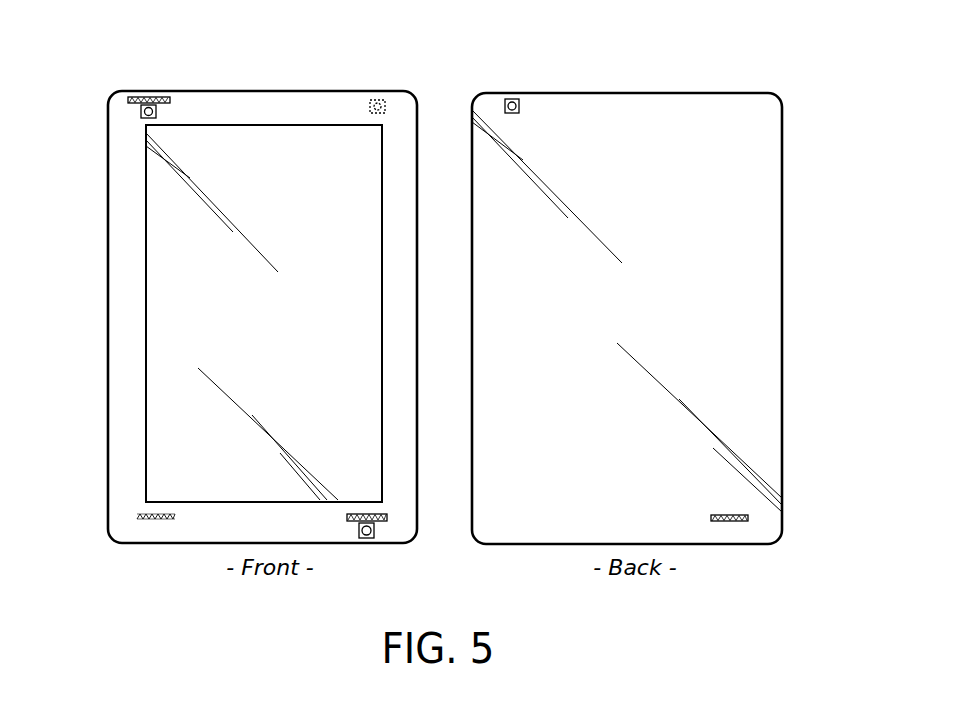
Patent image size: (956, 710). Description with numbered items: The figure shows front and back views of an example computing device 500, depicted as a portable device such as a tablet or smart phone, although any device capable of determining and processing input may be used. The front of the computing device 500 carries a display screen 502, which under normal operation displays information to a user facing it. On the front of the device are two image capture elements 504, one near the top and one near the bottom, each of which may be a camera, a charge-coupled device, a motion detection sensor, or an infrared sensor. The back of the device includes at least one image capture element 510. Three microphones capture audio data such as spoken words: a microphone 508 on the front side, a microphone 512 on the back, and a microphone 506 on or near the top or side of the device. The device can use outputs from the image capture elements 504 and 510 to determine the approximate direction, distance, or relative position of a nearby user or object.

The computing device 500 is at (806, 77).
The display screen 502 is at (146, 234).
The image capture elements 504 is at (140, 112).
The microphone 506 is at (158, 97).
The microphone 508 is at (378, 522).
The image capture element 510 is at (377, 102).
The microphone 512 is at (158, 518).